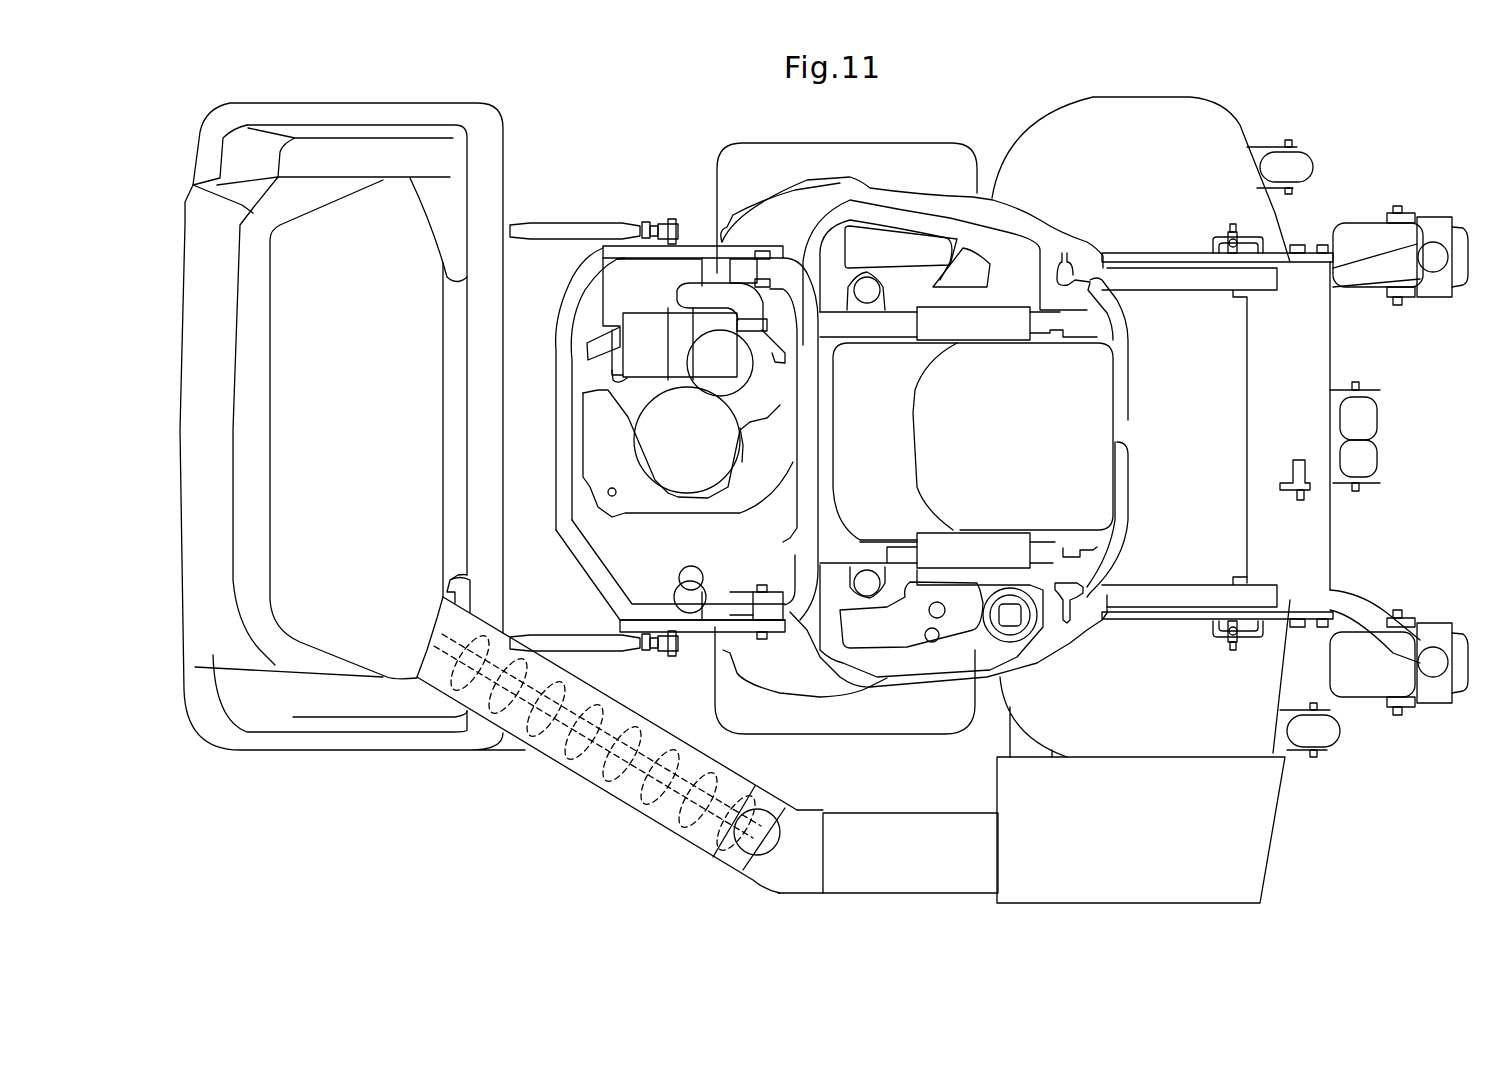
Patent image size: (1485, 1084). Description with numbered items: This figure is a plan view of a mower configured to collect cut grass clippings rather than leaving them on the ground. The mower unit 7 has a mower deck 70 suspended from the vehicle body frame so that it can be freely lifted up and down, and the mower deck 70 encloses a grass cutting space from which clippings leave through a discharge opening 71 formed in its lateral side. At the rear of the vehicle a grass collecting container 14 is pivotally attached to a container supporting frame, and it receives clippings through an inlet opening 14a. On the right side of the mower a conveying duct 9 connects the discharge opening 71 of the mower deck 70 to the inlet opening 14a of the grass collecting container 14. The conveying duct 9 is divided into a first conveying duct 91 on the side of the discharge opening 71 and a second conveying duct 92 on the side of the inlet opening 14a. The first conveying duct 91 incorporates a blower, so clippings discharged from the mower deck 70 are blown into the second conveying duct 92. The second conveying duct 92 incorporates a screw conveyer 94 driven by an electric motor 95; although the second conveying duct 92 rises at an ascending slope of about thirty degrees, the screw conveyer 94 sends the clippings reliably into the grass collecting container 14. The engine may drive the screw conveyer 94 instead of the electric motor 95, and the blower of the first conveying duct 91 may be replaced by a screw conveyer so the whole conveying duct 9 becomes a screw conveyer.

The mower unit 7 is at (1248, 118).
The grass collecting container 14 is at (311, 456).
The inlet opening 14a is at (453, 635).
The conveying duct 9 is at (611, 778).
The second conveying duct 92 is at (627, 807).
The screw conveyer 94 is at (573, 777).
The electric motor 95 is at (767, 853).
The first conveying duct 91 is at (915, 857).
The mower deck 70 is at (1250, 677).
The discharge opening 71 is at (1235, 820).